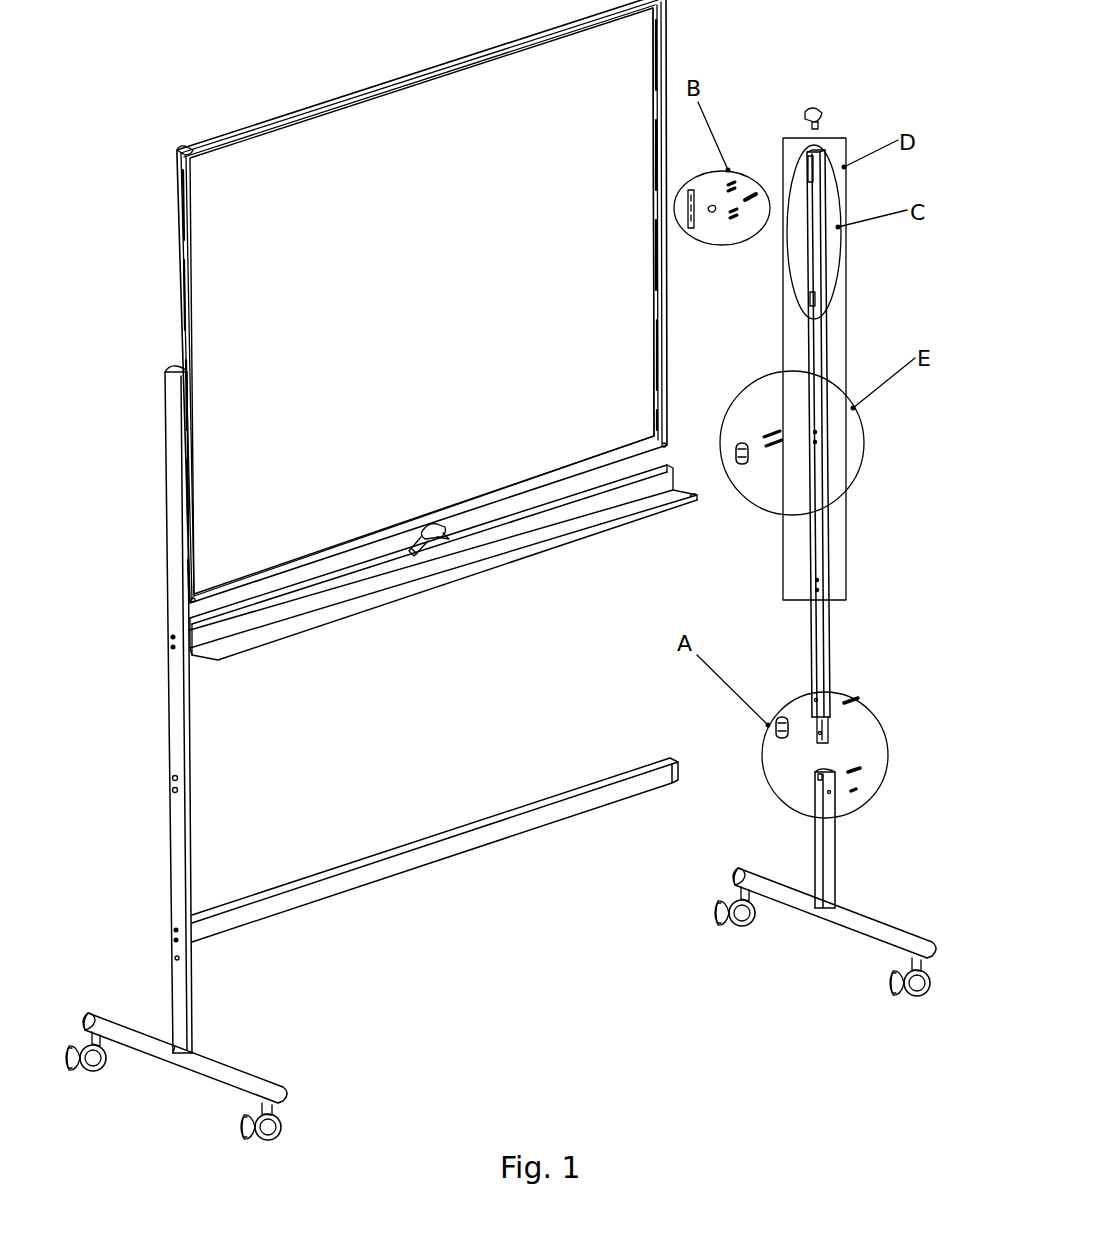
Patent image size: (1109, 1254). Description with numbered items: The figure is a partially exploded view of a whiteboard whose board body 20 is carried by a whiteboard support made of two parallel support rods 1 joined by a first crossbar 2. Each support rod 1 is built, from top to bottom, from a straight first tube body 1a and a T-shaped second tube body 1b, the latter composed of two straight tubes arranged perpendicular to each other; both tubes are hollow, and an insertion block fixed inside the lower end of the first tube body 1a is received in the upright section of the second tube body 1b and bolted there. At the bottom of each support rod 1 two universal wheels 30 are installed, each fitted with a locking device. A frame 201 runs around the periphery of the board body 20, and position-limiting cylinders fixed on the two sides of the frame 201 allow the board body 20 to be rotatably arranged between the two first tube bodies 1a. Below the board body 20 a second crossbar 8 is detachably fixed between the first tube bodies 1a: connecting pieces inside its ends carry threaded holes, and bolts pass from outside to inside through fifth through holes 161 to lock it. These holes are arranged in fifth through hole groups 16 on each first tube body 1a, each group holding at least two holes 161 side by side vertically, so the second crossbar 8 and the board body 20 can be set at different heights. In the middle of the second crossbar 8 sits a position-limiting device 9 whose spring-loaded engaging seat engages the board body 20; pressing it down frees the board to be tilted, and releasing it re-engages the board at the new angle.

The support rod 1 is at (849, 552).
The first tube body 1a is at (827, 623).
The second tube body 1b is at (833, 868).
The first crossbar 2 is at (367, 881).
The second crossbar 8 is at (277, 612).
The position-limiting device 9 is at (432, 540).
The fifth through hole group 16 is at (819, 524).
The fifth through hole 161 is at (815, 432).
The board body 20 is at (433, 90).
The frame 201 is at (663, 50).
The universal wheel 30 is at (893, 973).